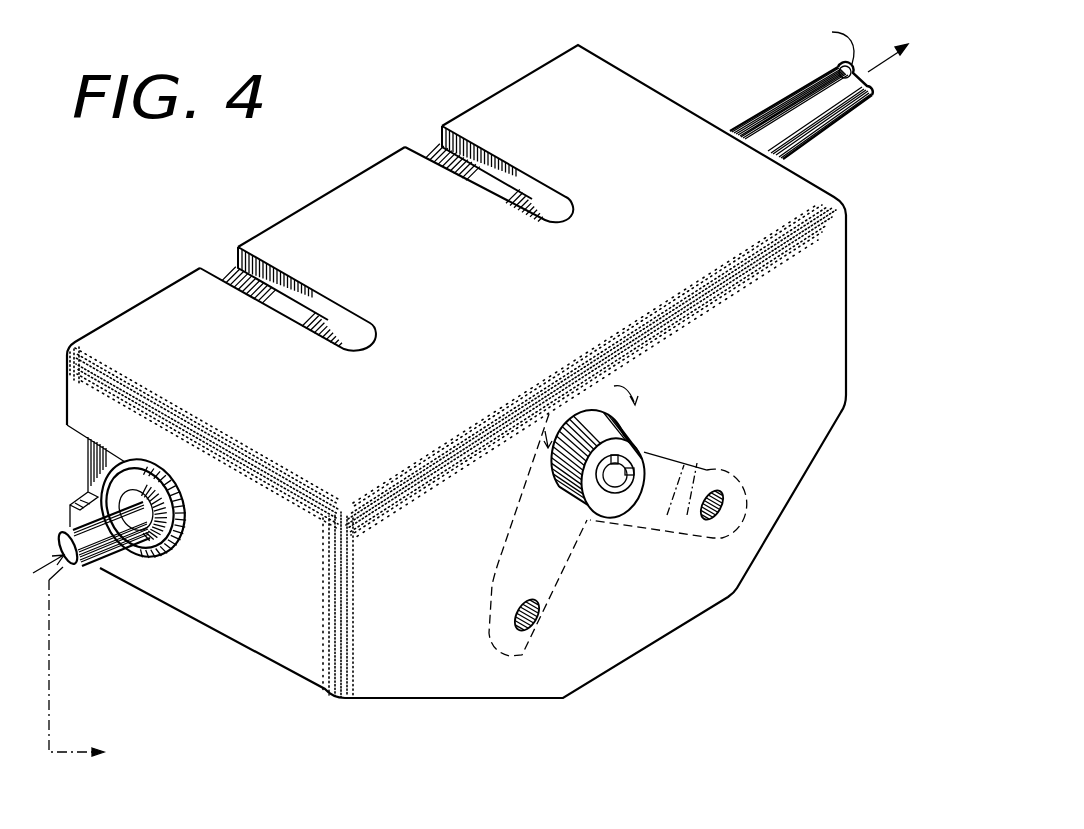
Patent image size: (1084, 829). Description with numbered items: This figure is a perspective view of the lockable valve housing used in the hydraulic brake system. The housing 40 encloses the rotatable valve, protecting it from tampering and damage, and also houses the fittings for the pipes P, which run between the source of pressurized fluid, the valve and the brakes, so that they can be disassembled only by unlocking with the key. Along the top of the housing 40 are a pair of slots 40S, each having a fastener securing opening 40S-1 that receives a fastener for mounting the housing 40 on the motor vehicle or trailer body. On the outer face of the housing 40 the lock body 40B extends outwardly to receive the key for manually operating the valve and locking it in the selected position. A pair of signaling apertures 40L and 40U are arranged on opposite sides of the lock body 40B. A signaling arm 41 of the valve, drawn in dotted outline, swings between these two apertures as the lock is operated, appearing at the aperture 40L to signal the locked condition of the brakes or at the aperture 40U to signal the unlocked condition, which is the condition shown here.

The housing 40 is at (420, 688).
The slots 40S is at (237, 270).
The fastener securing openings 40S-1 is at (345, 332).
The lock body 40B is at (632, 428).
The signaling arm 41 is at (537, 527).
The signaling aperture 40L is at (534, 633).
The signaling aperture 40U is at (712, 520).
The pipes P is at (762, 112).